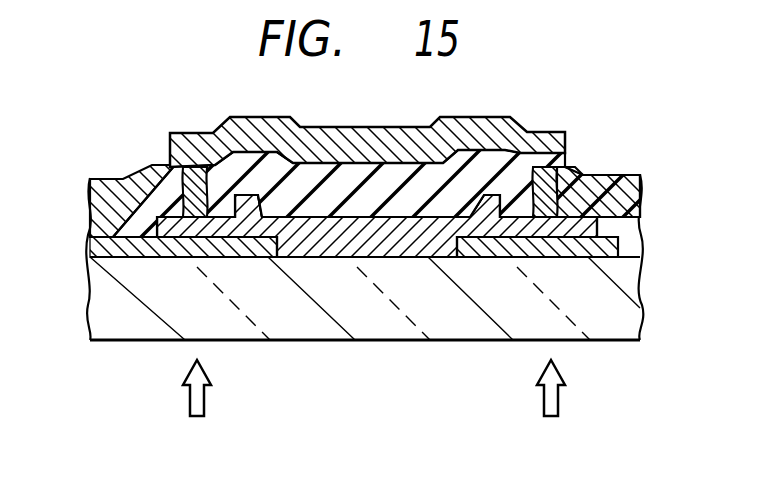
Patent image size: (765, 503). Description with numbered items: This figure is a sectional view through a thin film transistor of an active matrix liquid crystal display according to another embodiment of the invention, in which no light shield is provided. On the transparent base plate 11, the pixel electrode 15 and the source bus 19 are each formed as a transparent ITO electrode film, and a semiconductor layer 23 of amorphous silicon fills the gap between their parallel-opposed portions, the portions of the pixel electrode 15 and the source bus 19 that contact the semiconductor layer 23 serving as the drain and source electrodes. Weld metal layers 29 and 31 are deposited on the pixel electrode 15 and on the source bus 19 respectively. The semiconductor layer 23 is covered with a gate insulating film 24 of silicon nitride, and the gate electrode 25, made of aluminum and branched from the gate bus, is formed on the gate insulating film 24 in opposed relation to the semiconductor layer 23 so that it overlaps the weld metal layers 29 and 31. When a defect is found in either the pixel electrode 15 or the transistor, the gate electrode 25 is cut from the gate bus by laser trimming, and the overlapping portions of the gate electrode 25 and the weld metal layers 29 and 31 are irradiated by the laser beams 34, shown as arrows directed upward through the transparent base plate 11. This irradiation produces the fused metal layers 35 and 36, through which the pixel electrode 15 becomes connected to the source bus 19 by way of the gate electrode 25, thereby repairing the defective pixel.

The transparent base plate 11 is at (632, 284).
The pixel electrode 15 is at (110, 247).
The source bus 19 is at (610, 247).
The semiconductor layer 23 is at (332, 248).
The gate insulating film 24 is at (100, 182).
The gate electrode 25 is at (511, 129).
The weld metal layer 29 is at (158, 219).
The weld metal layer 31 is at (598, 226).
The laser beams 34 is at (204, 404).
The fused metal layer 35 is at (112, 190).
The fused metal layer 36 is at (590, 190).